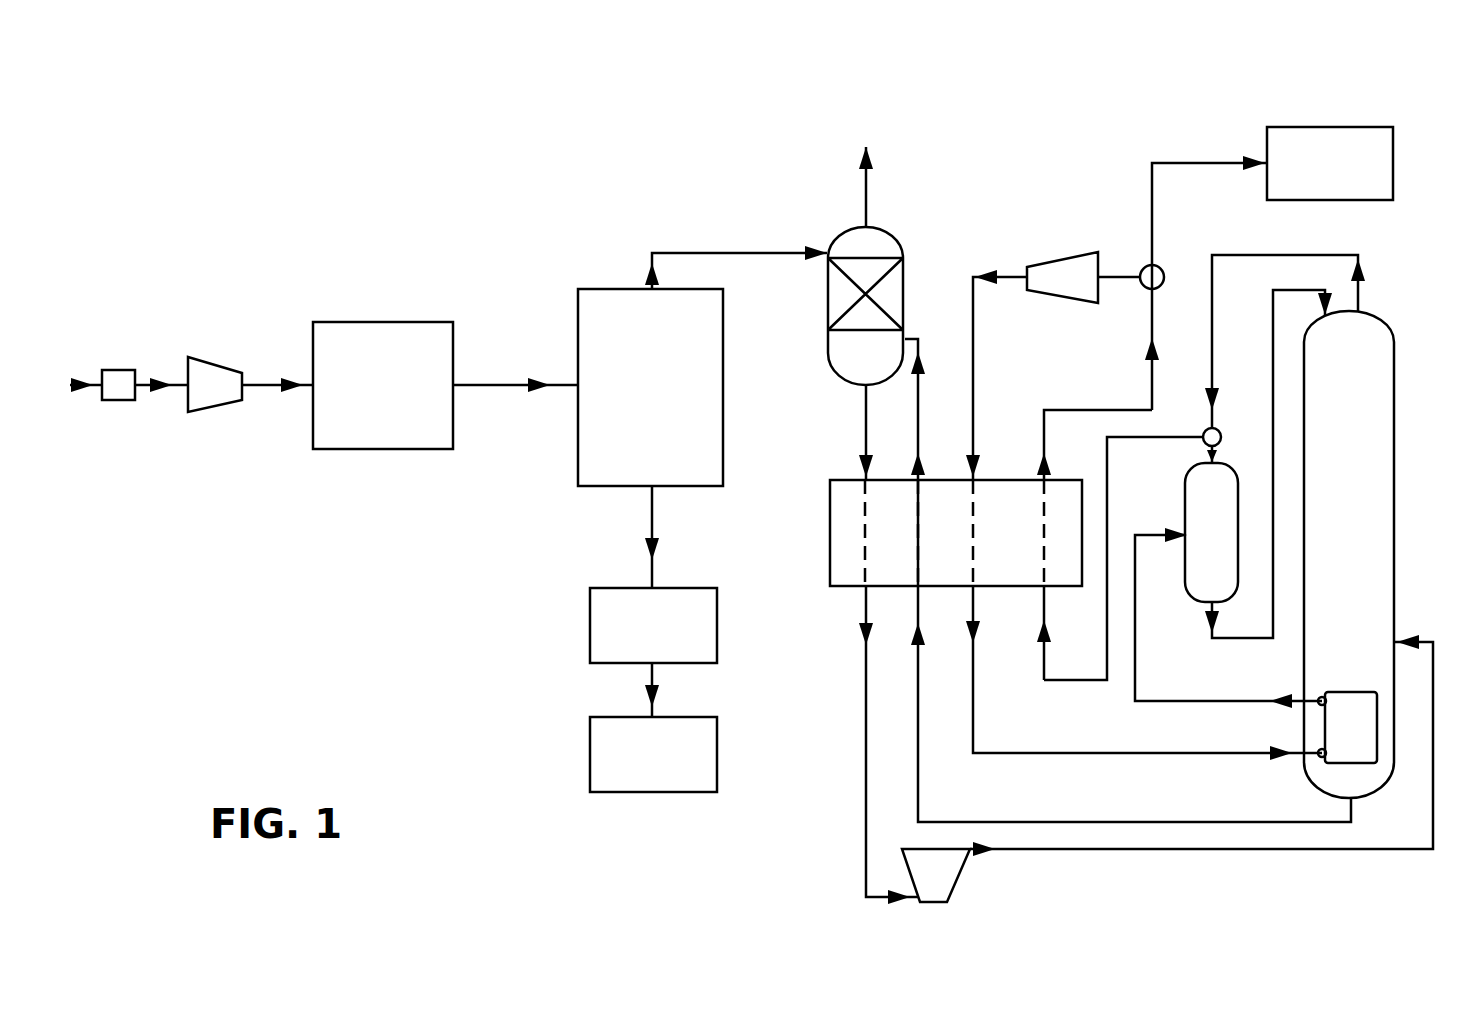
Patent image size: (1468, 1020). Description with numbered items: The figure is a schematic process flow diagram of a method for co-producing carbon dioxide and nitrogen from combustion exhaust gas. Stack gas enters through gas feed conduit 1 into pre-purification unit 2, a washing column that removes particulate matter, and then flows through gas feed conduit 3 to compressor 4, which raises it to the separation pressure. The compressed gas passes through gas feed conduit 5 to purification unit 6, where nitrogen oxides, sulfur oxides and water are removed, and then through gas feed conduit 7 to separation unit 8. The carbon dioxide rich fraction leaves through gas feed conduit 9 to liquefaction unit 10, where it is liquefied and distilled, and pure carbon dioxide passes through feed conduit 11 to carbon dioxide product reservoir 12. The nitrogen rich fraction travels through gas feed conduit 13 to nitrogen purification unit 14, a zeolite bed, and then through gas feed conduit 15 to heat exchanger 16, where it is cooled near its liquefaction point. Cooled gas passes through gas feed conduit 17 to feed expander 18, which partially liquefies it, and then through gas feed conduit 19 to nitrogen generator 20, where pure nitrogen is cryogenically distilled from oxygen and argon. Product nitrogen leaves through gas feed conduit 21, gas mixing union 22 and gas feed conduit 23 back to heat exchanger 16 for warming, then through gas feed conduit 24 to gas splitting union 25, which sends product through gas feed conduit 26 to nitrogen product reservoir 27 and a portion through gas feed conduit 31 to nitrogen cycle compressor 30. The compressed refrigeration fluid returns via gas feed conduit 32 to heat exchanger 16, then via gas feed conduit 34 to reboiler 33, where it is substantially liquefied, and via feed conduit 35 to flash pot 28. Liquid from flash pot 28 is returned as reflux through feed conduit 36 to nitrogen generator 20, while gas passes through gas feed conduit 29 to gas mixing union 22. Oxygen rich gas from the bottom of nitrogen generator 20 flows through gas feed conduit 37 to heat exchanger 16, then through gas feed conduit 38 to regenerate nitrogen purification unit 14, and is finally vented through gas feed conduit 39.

The gas feed conduit 1 is at (96, 384).
The pre-purification unit 2 is at (118, 385).
The gas feed conduit 3 is at (172, 370).
The compressor 4 is at (215, 384).
The gas feed conduit 5 is at (280, 383).
The purification unit 6 is at (383, 385).
The gas feed conduit 7 is at (520, 384).
The separation unit 8 is at (650, 387).
The gas feed conduit 9 is at (660, 540).
The liquefaction unit 10 is at (653, 625).
The feed conduit 11 is at (660, 688).
The carbon dioxide product reservoir 12 is at (653, 754).
The gas feed conduit 13 is at (770, 244).
The nitrogen purification unit 14 is at (895, 237).
The gas feed conduit 15 is at (866, 425).
The heat exchanger 16 is at (830, 545).
The gas feed conduit 17 is at (865, 797).
The feed expander 18 is at (936, 875).
The gas feed conduit 19 is at (1140, 848).
The nitrogen generator 20 is at (1349, 554).
The gas feed conduit 21 is at (1362, 290).
The gas mixing union 22 is at (1218, 430).
The gas feed conduit 23 is at (1152, 438).
The gas feed conduit 24 is at (1108, 410).
The gas splitting union 25 is at (1160, 287).
The gas feed conduit 26 is at (1215, 163).
The nitrogen product reservoir 27 is at (1330, 163).
The flash pot 28 is at (1211, 532).
The gas feed conduit 29 is at (1218, 448).
The nitrogen cycle compressor 30 is at (1062, 277).
The gas feed conduit 31 is at (1123, 270).
The gas feed conduit 32 is at (977, 337).
The reboiler 33 is at (1347, 727).
The gas feed conduit 34 is at (975, 683).
The feed conduit 35 is at (1218, 700).
The feed conduit 36 is at (1217, 615).
The gas feed conduit 37 is at (1140, 822).
The gas feed conduit 38 is at (920, 425).
The gas feed conduit 39 is at (870, 185).